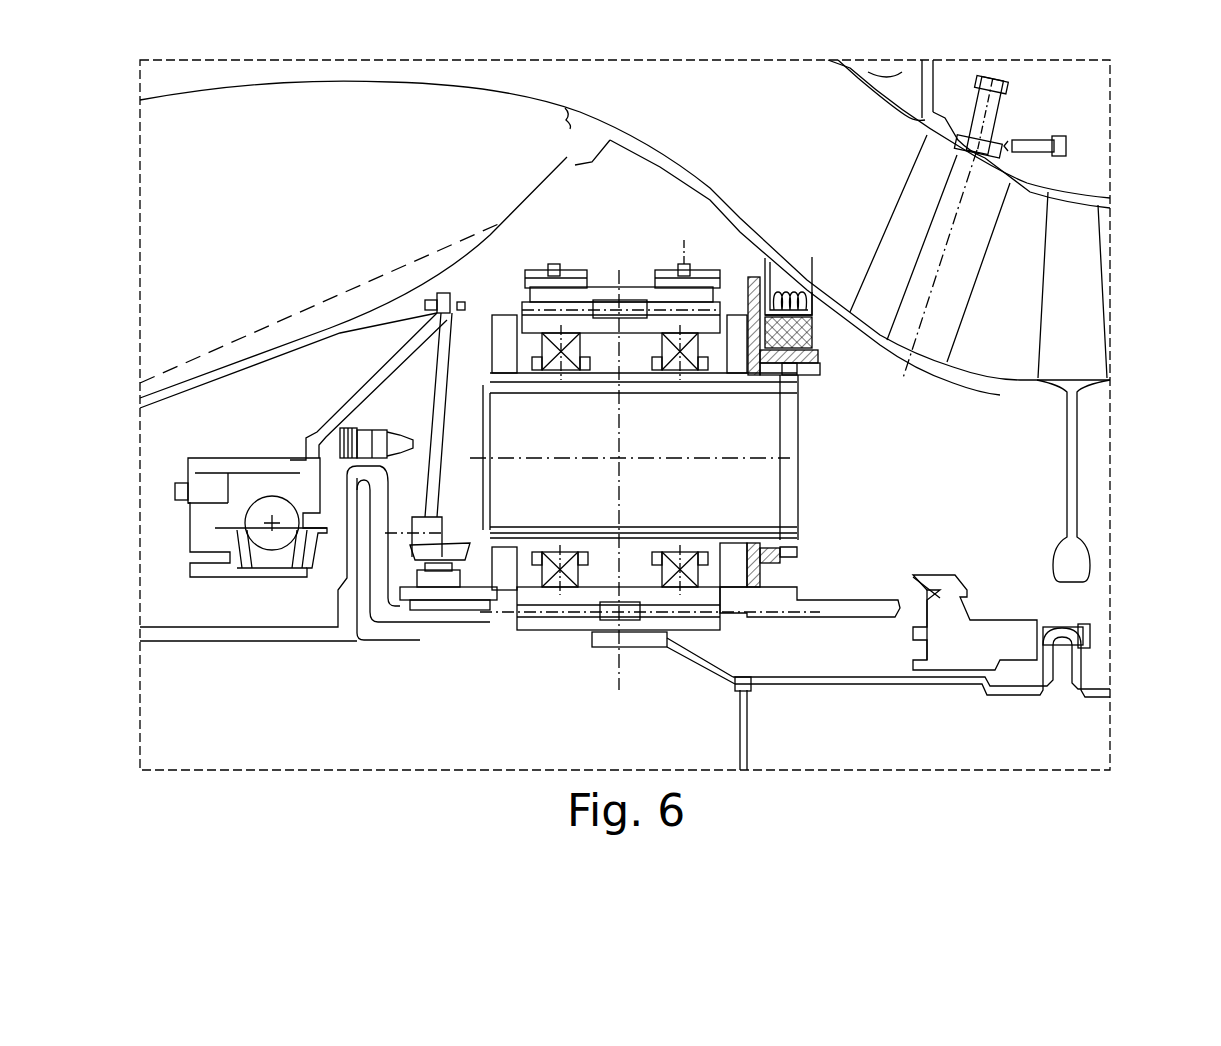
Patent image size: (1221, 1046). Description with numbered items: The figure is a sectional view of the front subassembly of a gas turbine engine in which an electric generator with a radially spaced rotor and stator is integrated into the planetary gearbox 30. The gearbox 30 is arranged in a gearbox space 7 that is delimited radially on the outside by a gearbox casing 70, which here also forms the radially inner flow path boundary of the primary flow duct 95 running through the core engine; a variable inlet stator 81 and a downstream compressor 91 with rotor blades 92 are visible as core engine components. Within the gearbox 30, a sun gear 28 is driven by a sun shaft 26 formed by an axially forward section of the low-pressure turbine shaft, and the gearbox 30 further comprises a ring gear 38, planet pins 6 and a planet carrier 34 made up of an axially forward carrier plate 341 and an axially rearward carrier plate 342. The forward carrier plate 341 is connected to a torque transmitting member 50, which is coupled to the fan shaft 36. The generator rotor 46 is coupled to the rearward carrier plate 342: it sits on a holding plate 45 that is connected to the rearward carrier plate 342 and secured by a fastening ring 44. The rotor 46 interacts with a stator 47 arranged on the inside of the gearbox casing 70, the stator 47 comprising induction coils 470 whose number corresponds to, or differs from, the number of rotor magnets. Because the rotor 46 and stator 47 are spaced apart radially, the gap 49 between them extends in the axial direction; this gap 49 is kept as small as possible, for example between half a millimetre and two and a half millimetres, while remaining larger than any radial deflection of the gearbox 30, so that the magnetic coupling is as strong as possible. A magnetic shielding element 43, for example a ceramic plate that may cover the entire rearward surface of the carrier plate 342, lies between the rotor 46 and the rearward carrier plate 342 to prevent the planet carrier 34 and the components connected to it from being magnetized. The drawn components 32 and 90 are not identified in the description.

The planet pins 6 is at (640, 375).
The gearbox space 7 is at (615, 185).
The sun shaft 26 is at (855, 690).
The sun gear 28 is at (578, 622).
The planetary gearbox 30 is at (640, 250).
The bearing 32 is at (618, 315).
The planet carrier 34 is at (480, 345).
The fan shaft 36 is at (245, 642).
The ring gear 38 is at (545, 268).
The magnetic shielding element 43 is at (745, 283).
The fastening ring 44 is at (800, 372).
The holding plate 45 is at (823, 358).
The rotor 46 is at (818, 360).
The stator 47 is at (787, 283).
The gap 49 is at (766, 300).
The torque transmitting member 50 is at (482, 597).
The gearbox casing 70 is at (712, 190).
The variable inlet stator 81 is at (985, 212).
The rotor shaft 90 is at (705, 465).
The compressor 91 is at (1092, 173).
The rotor blades 92 is at (1090, 282).
The primary flow duct 95 is at (850, 140).
The axially forward carrier plate 341 is at (505, 312).
The axially rearward carrier plate 342 is at (781, 423).
The induction coils 470 is at (812, 325).